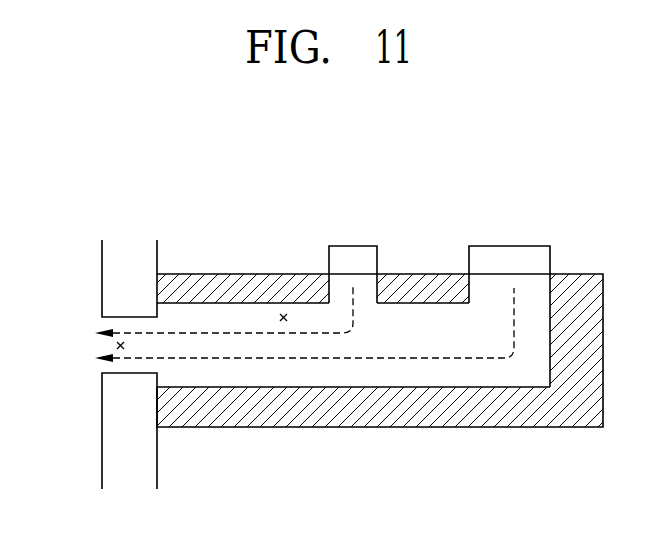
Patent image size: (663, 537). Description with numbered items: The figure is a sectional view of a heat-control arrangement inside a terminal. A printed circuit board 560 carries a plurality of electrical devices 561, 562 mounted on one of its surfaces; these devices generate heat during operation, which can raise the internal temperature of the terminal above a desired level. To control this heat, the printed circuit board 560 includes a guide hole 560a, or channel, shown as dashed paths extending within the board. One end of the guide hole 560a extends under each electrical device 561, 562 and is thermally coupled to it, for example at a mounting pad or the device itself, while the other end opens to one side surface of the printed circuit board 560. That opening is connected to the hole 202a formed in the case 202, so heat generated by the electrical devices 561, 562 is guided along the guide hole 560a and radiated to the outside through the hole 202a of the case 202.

The printed circuit board 560 is at (525, 420).
The guide hole 560a is at (283, 313).
The electrical device 561 is at (356, 253).
The electrical device 562 is at (507, 255).
The case 202 is at (110, 418).
The hole 202a is at (116, 345).